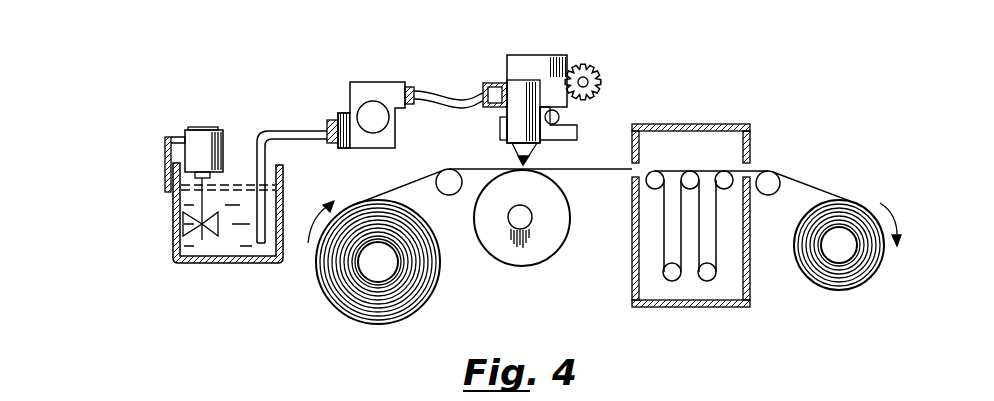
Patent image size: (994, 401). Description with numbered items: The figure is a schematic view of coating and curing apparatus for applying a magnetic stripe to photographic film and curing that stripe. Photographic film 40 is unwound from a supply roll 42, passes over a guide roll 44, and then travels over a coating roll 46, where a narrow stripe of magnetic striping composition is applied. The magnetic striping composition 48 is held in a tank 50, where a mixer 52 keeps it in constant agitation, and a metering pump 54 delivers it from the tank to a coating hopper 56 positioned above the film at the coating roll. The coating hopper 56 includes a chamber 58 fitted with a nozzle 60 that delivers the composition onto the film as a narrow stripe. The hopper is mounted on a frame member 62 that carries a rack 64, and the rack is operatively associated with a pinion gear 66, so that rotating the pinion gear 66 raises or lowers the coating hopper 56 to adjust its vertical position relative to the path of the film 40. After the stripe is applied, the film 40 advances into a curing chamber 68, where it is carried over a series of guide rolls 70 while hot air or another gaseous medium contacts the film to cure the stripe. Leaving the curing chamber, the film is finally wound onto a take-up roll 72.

The photographic film 40 is at (403, 187).
The supply roll 42 is at (320, 284).
The guide roll 44 is at (449, 195).
The coating roll 46 is at (522, 266).
The magnetic striping composition 48 is at (233, 238).
The tank 50 is at (188, 258).
The mixer 52 is at (203, 142).
The metering pump 54 is at (372, 101).
The coating hopper 56 is at (503, 51).
The chamber 58 is at (512, 139).
The nozzle 60 is at (530, 158).
The frame member 62 is at (533, 64).
The rack 64 is at (573, 65).
The pinion gear 66 is at (601, 87).
The curing chamber 68 is at (632, 289).
The guide rolls 70 is at (655, 172).
The take-up roll 72 is at (838, 285).